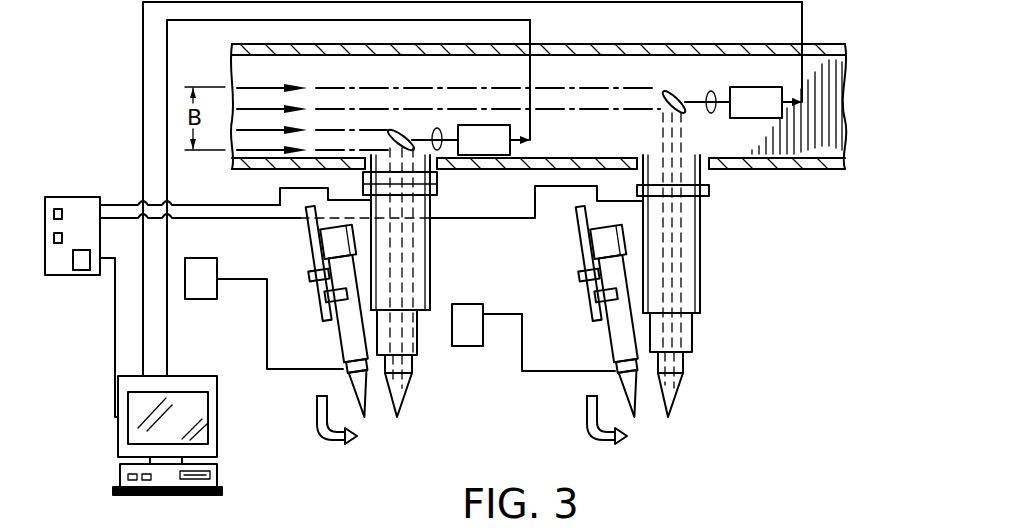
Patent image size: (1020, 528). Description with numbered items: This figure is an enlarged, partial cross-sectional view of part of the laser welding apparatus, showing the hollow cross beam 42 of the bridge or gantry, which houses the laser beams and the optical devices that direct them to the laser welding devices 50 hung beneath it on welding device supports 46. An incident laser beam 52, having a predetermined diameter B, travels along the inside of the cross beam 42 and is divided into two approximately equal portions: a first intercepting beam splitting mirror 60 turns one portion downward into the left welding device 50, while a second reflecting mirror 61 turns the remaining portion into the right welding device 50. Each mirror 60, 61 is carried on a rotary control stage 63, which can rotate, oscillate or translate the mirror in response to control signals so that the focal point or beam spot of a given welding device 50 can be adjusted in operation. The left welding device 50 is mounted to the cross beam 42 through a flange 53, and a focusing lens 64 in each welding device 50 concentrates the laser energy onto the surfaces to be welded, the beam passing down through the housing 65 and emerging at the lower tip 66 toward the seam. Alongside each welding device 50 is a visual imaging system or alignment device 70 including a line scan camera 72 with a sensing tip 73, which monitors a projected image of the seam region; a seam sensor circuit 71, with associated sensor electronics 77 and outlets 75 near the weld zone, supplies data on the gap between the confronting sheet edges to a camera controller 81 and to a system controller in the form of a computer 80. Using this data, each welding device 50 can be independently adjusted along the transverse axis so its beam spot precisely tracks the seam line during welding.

The cross beam 42 is at (813, 47).
The welding device support 46 is at (709, 184).
The laser welding device 50 is at (712, 265).
The incident laser beam 52 is at (347, 112).
The flange 53 is at (438, 180).
The intercepting beam splitting mirror 60 is at (392, 132).
The reflecting mirror 61 is at (670, 92).
The rotary control stage 63 is at (472, 151).
The focusing lens 64 is at (705, 197).
The probe housing 65 is at (701, 287).
The nozzle 66 is at (681, 395).
The visual imaging system or alignment device 70 is at (302, 286).
The seam sensor circuit 71 is at (213, 220).
The line scan camera 72 is at (598, 248).
The sensor tip 73 is at (352, 363).
The outlet 75 is at (317, 429).
The sensor electronics 77 is at (202, 299).
The computer 80 is at (122, 432).
The camera controller 81 is at (70, 197).